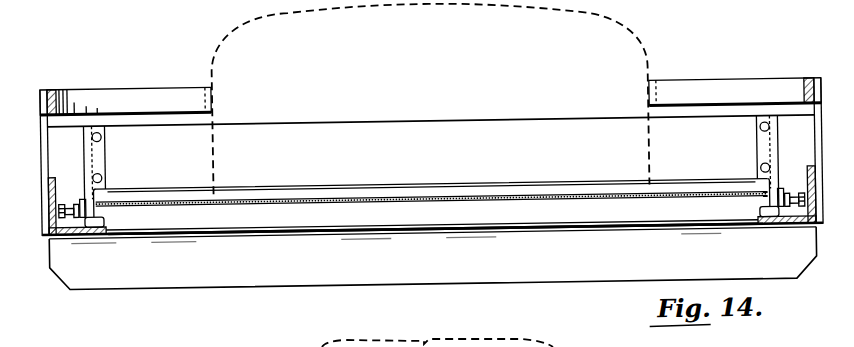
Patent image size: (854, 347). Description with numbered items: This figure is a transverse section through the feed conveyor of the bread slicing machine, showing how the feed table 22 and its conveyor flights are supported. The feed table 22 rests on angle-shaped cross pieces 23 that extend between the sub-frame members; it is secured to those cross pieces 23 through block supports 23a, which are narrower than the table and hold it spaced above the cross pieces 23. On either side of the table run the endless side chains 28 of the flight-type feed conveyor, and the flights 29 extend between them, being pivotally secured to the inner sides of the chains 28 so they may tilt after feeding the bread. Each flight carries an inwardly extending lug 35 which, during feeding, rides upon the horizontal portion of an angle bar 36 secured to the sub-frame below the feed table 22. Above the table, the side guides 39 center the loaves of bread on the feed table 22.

The feed table 22 is at (668, 210).
The angle-shaped cross pieces 23 is at (378, 270).
The block supports 23a is at (507, 225).
The endless side chains 28 is at (70, 204).
The flights 29 is at (377, 135).
The inwardly extending lug 35 is at (103, 224).
The angle bars 36 is at (60, 181).
The side guides 39 is at (129, 97).